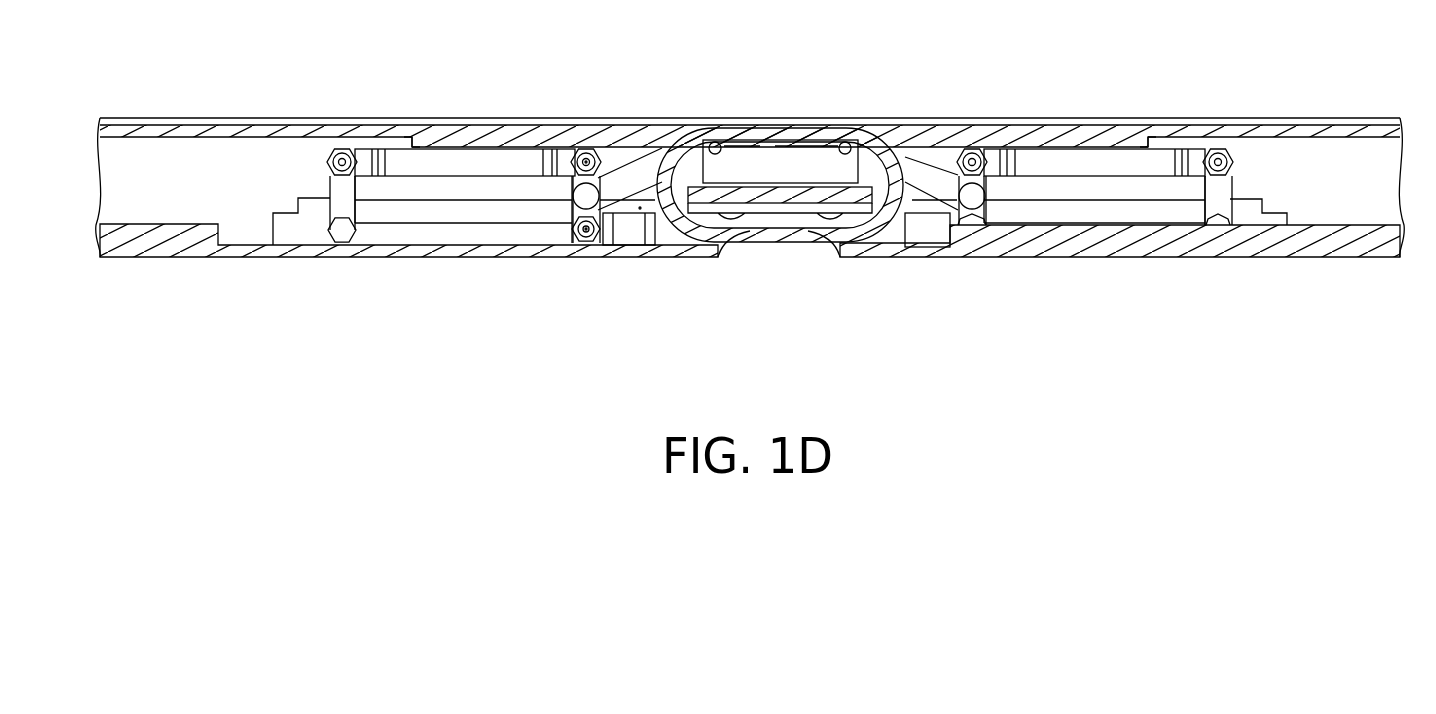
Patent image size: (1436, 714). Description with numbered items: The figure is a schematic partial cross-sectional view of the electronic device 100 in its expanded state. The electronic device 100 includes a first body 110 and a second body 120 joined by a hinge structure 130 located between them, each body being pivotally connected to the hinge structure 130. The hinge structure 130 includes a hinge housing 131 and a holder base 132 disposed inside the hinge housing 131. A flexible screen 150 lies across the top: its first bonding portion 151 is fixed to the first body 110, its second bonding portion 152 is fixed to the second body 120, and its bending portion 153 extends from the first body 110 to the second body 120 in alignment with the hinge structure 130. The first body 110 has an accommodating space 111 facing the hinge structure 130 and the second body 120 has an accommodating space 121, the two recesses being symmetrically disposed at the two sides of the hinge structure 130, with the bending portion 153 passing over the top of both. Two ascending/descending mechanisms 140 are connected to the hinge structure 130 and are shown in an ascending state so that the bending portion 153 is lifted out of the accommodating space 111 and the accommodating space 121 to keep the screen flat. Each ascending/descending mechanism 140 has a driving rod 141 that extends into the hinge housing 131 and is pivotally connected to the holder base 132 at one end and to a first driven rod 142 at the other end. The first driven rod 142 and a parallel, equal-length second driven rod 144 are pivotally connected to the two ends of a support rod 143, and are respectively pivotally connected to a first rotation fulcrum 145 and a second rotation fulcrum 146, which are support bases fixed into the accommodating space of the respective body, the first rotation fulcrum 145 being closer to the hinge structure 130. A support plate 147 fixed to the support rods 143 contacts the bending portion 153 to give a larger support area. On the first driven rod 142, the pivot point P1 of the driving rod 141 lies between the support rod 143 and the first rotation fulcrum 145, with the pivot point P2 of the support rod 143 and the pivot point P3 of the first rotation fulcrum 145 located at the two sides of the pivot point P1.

The electronic device 100 is at (1408, 388).
The first body 110 is at (190, 238).
The accommodating space 111 is at (415, 124).
The second body 120 is at (1252, 240).
The accommodating space 121 is at (1152, 124).
The hinge structure 130 is at (807, 139).
The hinge housing 131 is at (857, 129).
The holder base 132 is at (757, 165).
The ascending/descending mechanism 140 is at (289, 184).
The driving rod 141 is at (632, 170).
The first driven rod 142 is at (578, 200).
The support rod 143 is at (455, 165).
The second driven rod 144 is at (342, 190).
The first rotation fulcrum 145 is at (625, 237).
The second rotation fulcrum 146 is at (303, 233).
The support plate 147 is at (527, 137).
The flexible screen 150 is at (750, 84).
The first bonding portion 151 is at (119, 122).
The second bonding portion 152 is at (1218, 120).
The bending portion 153 is at (722, 127).
The pivot point P1 is at (641, 212).
The pivot point P2 is at (590, 156).
The pivot point P3 is at (586, 234).